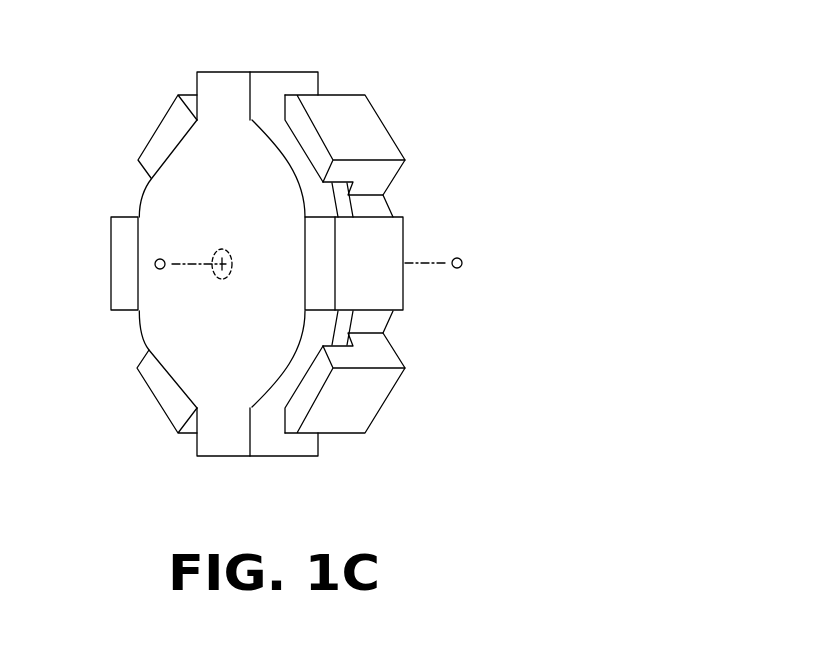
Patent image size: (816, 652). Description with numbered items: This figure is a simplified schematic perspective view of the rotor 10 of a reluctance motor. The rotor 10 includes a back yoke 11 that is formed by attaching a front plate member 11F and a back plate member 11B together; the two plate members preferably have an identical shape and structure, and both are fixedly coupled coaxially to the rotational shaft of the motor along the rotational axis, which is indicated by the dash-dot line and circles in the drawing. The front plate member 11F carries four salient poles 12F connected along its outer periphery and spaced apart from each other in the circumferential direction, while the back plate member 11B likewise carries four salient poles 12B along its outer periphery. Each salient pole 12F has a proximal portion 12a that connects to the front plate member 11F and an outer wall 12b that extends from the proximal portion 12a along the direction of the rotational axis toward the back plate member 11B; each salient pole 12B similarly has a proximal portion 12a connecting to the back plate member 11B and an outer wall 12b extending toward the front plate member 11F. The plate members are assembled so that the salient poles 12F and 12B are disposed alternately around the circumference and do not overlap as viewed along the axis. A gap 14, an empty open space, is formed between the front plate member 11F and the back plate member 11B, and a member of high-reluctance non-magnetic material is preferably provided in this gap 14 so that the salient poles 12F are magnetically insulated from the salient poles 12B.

The rotor 10 is at (275, 259).
The back yoke 11 is at (328, 264).
The front plate member 11F is at (277, 232).
The back plate member 11B is at (385, 208).
The salient poles 12F is at (378, 30).
The salient poles 12B is at (130, 141).
The proximal portion 12a is at (125, 283).
The outer wall 12b is at (167, 130).
The gap 14 is at (334, 207).